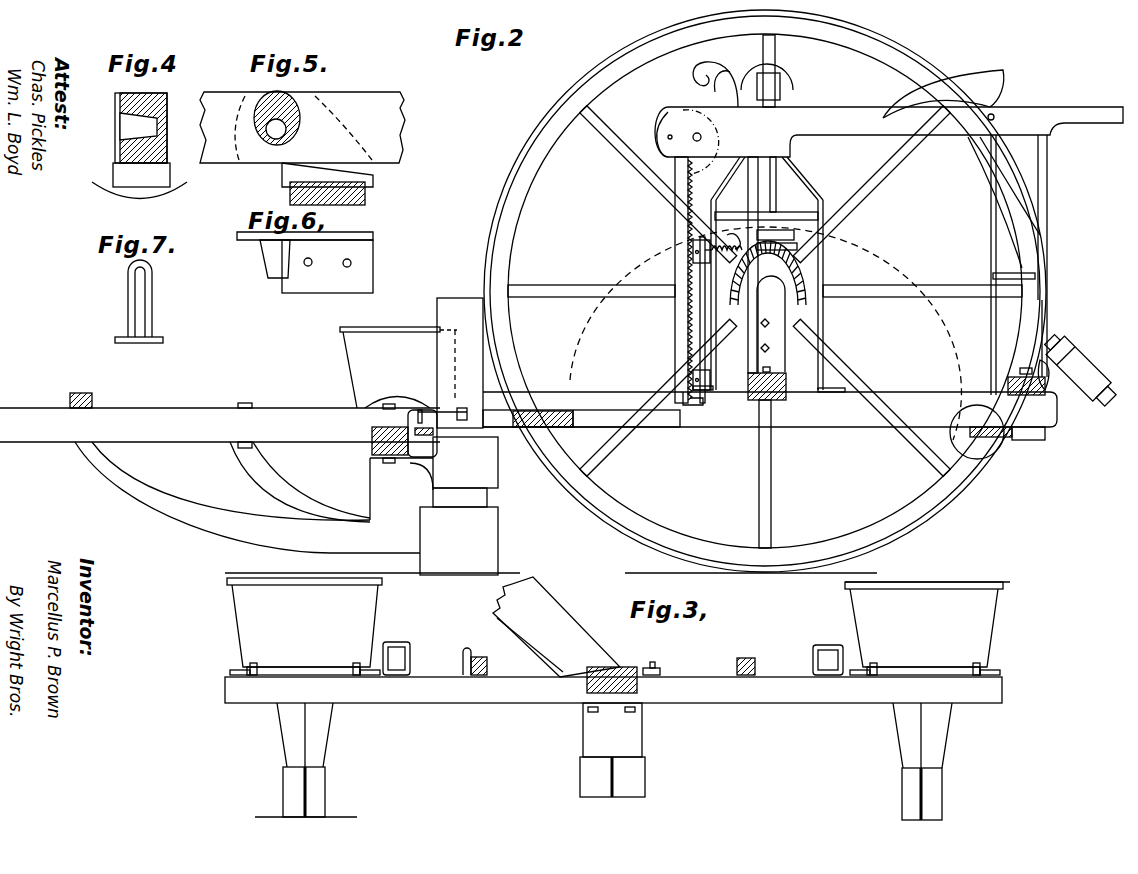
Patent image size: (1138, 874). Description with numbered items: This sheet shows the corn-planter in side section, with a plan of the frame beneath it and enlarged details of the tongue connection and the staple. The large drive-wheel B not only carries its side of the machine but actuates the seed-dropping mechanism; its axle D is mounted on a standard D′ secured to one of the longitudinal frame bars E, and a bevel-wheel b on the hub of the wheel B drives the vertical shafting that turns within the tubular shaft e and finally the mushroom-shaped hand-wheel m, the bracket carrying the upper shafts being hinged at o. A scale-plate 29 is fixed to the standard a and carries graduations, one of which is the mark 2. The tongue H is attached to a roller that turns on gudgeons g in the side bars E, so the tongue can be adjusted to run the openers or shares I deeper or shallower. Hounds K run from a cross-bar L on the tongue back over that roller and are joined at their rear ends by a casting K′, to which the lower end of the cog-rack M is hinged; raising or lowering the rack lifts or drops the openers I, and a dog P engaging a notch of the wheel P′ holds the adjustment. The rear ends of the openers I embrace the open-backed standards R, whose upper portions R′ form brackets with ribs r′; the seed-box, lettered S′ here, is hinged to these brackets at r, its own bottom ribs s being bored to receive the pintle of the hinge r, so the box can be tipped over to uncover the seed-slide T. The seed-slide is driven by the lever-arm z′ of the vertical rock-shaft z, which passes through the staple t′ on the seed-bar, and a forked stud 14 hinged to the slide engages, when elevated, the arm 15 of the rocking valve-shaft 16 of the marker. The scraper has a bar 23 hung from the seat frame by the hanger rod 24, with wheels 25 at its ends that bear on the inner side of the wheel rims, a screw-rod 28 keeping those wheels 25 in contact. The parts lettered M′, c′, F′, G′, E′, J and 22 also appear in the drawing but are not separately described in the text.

In FIG. 2, the drive-wheel B is at (765, 291).
In FIG. 2, the hinge o is at (889, 146).
In FIG. 2, the dog P is at (715, 84).
In FIG. 2, the hook catch M′ is at (734, 74).
In FIG. 2, the notched wheel P′ is at (654, 134).
In FIG. 2, the hand-wheel m is at (776, 71).
In FIG. 2, the standard a is at (769, 274).
In FIG. 2, the tubular shaft e is at (777, 184).
In FIG. 2, the scale-plate 29 is at (766, 214).
In FIG. 2, the scale mark 2 is at (781, 234).
In FIG. 2, the bar / block c′ is at (784, 247).
In FIG. 5, the bar / block c′ is at (336, 184).
In FIG. 2, the axle D is at (768, 273).
In FIG. 2, the bevel-wheel b is at (795, 265).
In FIG. 2, the standard D′ is at (767, 278).
In FIG. 2, the cog-rack M is at (670, 280).
In FIG. 2, the vertical rock-shaft z is at (709, 320).
In FIG. 2, the lever-arm z′ is at (728, 229).
In FIG. 2, the casting K′ is at (704, 404).
In FIG. 2, the longitudinal bar E is at (770, 399).
In FIG. 4, the longitudinal bar E is at (139, 146).
In FIG. 5, the longitudinal bar E is at (302, 127).
In FIG. 2, the hound K is at (581, 430).
In FIG. 3, the hound K is at (622, 664).
In FIG. 2, the bearing block F′ is at (779, 418).
In FIG. 2, the hanger rod 24 is at (1007, 265).
In FIG. 2, the screw-rod 28 is at (1014, 269).
In FIG. 2, the wheel 25 is at (995, 395).
In FIG. 2, the scraper bar 23 is at (1019, 448).
In FIG. 2, the spring box 22 is at (1088, 366).
In FIG. 2, the tongue H is at (220, 425).
In FIG. 3, the tongue H is at (565, 635).
In FIG. 2, the cross-bar L is at (81, 391).
In FIG. 2, the hopper S′ is at (411, 363).
In FIG. 3, the hopper S′ is at (615, 622).
In FIG. 2, the platform G′ is at (372, 452).
In FIG. 3, the platform G′ is at (613, 690).
In FIG. 2, the forked stud 14 is at (411, 433).
In FIG. 3, the forked stud 14 is at (660, 671).
In FIG. 2, the arm 15 is at (442, 408).
In FIG. 3, the arm 15 is at (657, 658).
In FIG. 2, the rocking valve-shaft 16 is at (466, 406).
In FIG. 2, the seed-slide T is at (465, 462).
In FIG. 2, the open-backed standard R is at (460, 497).
In FIG. 3, the open-backed standard R is at (614, 761).
In FIG. 2, the foot box J is at (454, 519).
In FIG. 3, the foot box J is at (612, 750).
In FIG. 2, the opener I is at (297, 507).
In FIG. 3, the opener I is at (598, 793).
In FIG. 3, the bracket R′ is at (613, 684).
In FIG. 3, the rib s is at (615, 662).
In FIG. 3, the hinge r is at (613, 668).
In FIG. 3, the rib r′ is at (247, 676).
In FIG. 3, the box E′ is at (613, 644).
In FIG. 3, the staple t′ is at (471, 653).
In FIG. 7, the staple t′ is at (141, 301).
In FIG. 4, the gudgeon g is at (138, 126).
In FIG. 5, the gudgeon g is at (277, 118).
In FIG. 6, the gudgeon g is at (305, 262).